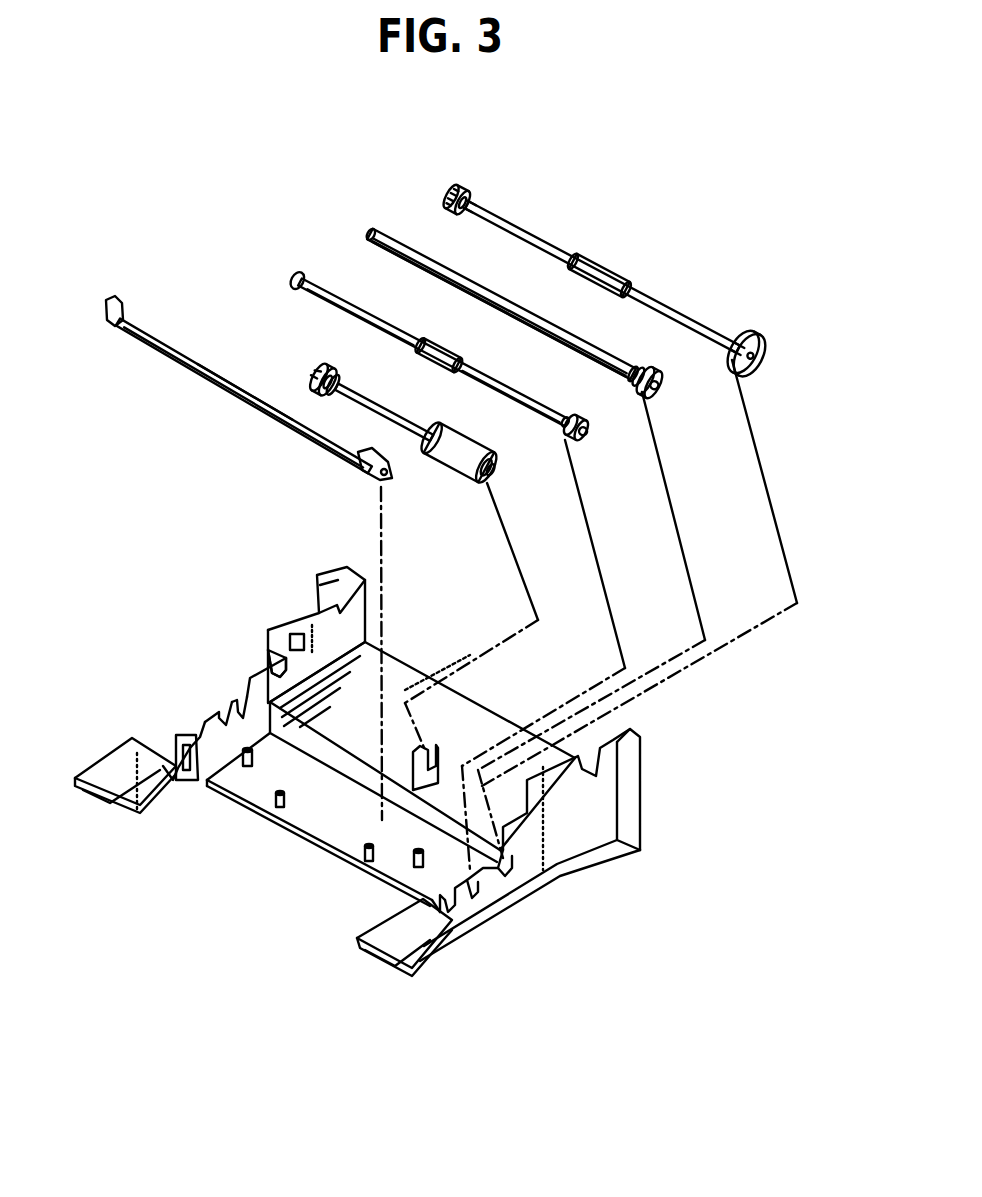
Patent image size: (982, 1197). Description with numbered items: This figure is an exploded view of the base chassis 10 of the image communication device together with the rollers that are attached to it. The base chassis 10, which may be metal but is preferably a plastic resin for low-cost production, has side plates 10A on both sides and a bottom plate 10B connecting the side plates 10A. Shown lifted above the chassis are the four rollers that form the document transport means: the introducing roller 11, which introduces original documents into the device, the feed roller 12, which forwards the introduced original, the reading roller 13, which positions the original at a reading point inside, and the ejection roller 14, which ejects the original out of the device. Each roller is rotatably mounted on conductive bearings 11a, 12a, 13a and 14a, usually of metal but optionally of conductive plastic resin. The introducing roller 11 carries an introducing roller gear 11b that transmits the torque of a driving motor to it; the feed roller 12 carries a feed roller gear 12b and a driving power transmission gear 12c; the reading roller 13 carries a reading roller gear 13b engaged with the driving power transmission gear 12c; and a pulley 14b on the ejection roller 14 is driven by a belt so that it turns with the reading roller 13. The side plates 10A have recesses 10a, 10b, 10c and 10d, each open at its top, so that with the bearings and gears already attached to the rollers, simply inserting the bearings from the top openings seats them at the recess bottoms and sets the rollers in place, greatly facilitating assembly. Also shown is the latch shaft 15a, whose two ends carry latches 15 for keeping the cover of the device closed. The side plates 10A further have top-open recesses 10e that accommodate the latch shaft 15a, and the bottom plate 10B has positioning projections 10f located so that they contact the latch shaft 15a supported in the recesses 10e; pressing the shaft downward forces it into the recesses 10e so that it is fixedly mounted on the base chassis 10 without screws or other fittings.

The base chassis 10 is at (396, 796).
The side plates 10A is at (337, 568).
The bottom plate 10B is at (323, 822).
The recess 10a is at (277, 660).
The recess 10b is at (242, 710).
The recess 10c is at (220, 720).
The recess 10d is at (183, 750).
The recess 10e is at (460, 885).
The positioning projections 10f is at (260, 800).
The introducing roller 11 is at (467, 443).
The bearing 11a is at (347, 380).
The introducing roller gear 11b is at (330, 367).
The feed roller 12 is at (610, 263).
The bearing 12a is at (470, 200).
The feed roller gear 12b is at (453, 183).
The driving power transmission gear 12c is at (767, 347).
The reading roller 13 is at (477, 287).
The bearing 13a is at (370, 233).
The reading roller gear 13b is at (655, 392).
The ejection roller 14 is at (447, 347).
The bearing 14a is at (293, 273).
The pulley 14b is at (590, 433).
The latches 15 is at (113, 297).
The latch shaft 15a is at (240, 398).